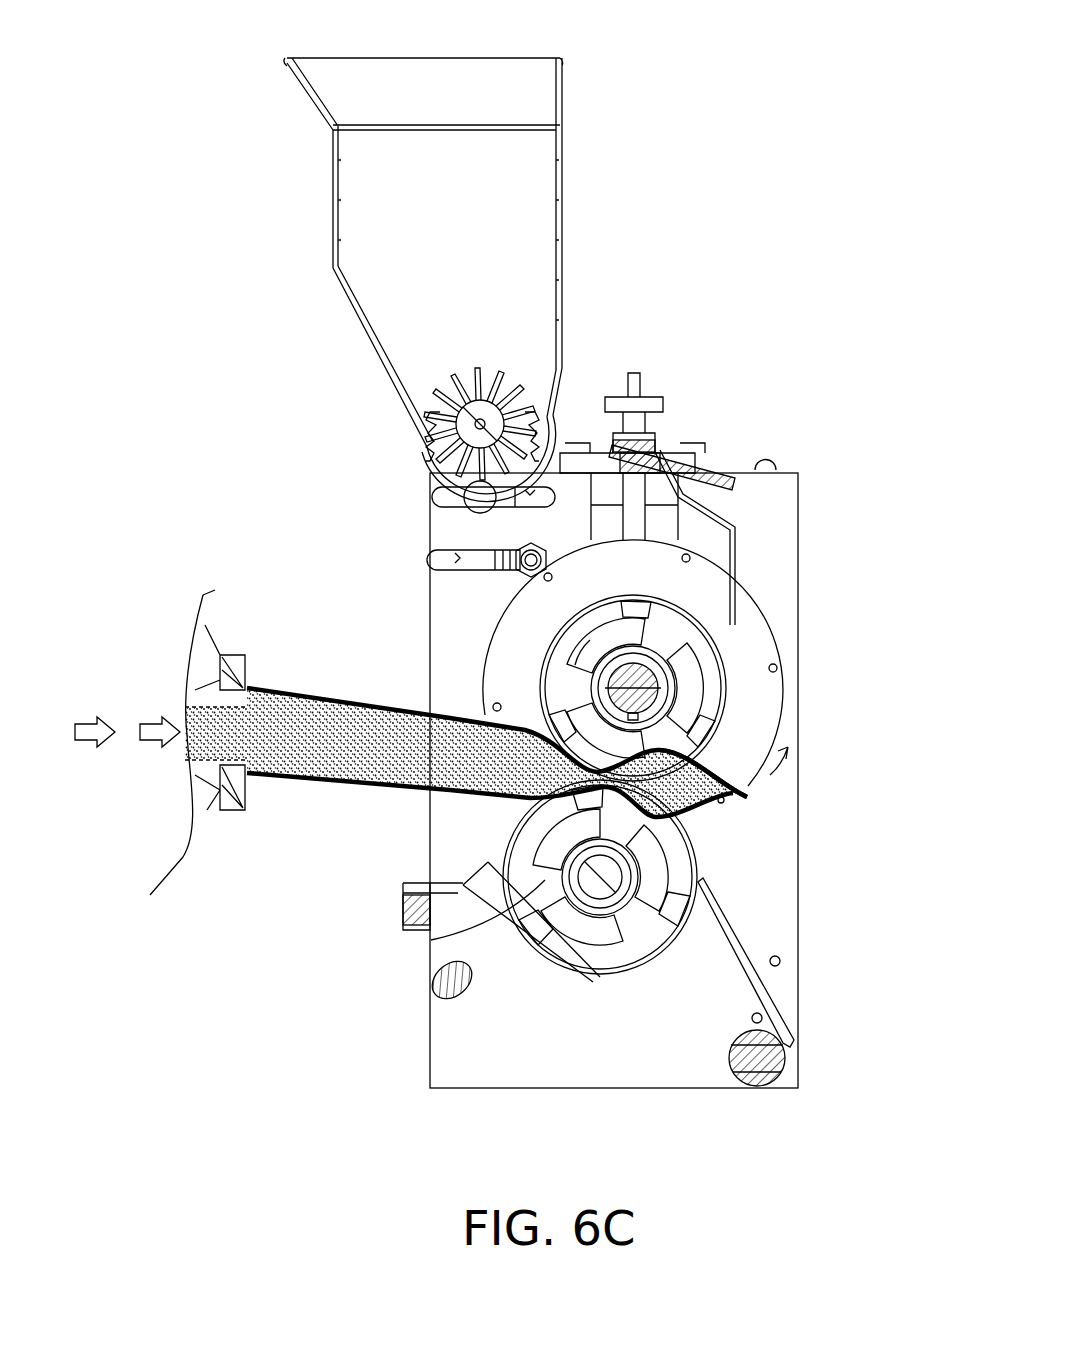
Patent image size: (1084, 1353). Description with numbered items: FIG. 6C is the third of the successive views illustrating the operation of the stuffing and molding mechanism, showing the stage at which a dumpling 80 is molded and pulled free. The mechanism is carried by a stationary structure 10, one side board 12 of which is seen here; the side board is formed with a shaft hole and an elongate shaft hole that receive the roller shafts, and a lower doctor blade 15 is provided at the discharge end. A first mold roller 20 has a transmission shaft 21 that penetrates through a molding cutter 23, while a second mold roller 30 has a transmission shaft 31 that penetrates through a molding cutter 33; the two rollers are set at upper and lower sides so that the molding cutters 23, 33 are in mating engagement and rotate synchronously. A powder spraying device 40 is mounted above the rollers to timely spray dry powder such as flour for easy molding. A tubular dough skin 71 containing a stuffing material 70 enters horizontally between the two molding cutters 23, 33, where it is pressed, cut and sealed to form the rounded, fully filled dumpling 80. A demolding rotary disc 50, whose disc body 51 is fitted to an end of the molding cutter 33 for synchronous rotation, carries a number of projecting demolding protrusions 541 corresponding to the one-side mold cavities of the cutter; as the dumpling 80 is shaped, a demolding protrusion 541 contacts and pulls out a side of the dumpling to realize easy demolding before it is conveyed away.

The stationary structure 10 is at (789, 438).
The side board 12 is at (440, 1030).
The lower doctor blade 15 is at (765, 990).
The first mold roller 20 is at (545, 975).
The transmission shaft 21 is at (599, 895).
The molding cutter 23 is at (547, 938).
The second mold roller 30 is at (555, 690).
The transmission shaft 31 is at (688, 652).
The molding cutter 33 is at (592, 665).
The powder spraying device 40 is at (577, 121).
The demolding rotary disc 50 is at (795, 724).
The disc body 51 is at (780, 690).
The stuffing material 70 is at (315, 782).
The tubular dough skin 71 is at (370, 788).
The dumpling 80 is at (692, 812).
The demolding protrusion 541 is at (724, 803).